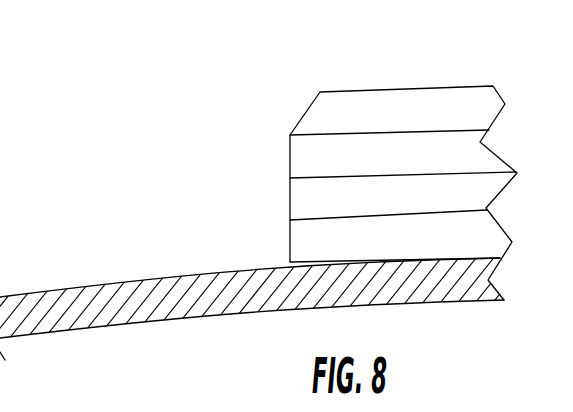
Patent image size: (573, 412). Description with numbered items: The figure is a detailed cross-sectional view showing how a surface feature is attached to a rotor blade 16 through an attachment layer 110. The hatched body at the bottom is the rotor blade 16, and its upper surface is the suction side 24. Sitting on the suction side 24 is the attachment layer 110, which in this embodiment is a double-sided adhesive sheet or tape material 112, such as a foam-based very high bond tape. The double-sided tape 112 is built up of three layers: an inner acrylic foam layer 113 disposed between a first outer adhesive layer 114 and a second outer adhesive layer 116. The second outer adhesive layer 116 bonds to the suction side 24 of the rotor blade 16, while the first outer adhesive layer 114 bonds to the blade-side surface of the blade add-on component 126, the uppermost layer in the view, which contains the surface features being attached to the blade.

The rotor blade 16 is at (58, 288).
The suction side 24 is at (122, 283).
The attachment layer 110 is at (172, 183).
The double-sided adhesive sheet or tape material 112 is at (243, 138).
The inner acrylic foam layer 113 is at (287, 205).
The first outer adhesive layer 114 is at (288, 153).
The second outer adhesive layer 116 is at (290, 243).
The blade add-on component 126 is at (378, 90).